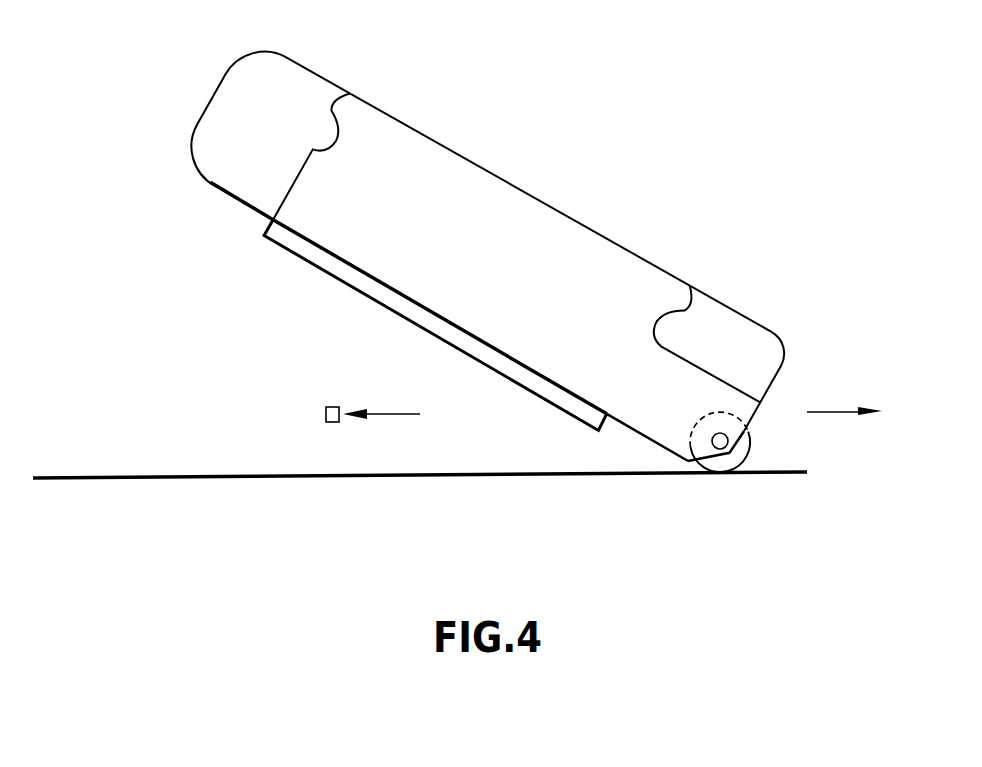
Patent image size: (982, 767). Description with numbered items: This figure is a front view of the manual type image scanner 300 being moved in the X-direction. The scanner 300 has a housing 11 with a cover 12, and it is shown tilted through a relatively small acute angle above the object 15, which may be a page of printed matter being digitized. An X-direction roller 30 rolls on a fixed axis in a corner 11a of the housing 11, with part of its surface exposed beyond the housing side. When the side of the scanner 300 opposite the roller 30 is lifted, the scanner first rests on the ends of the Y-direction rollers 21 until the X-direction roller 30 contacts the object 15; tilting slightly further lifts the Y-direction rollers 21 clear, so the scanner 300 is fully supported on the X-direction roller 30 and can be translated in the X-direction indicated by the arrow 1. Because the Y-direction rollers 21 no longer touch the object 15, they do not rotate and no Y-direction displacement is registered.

The manual type image scanner 300 is at (377, 80).
The housing 11 is at (232, 102).
The cover 12 is at (498, 207).
The Y-direction rollers 21 is at (296, 245).
The object 15 is at (89, 477).
The corner 11a is at (698, 446).
The X-direction roller 30 is at (733, 458).
The direction of travel 1 is at (853, 411).